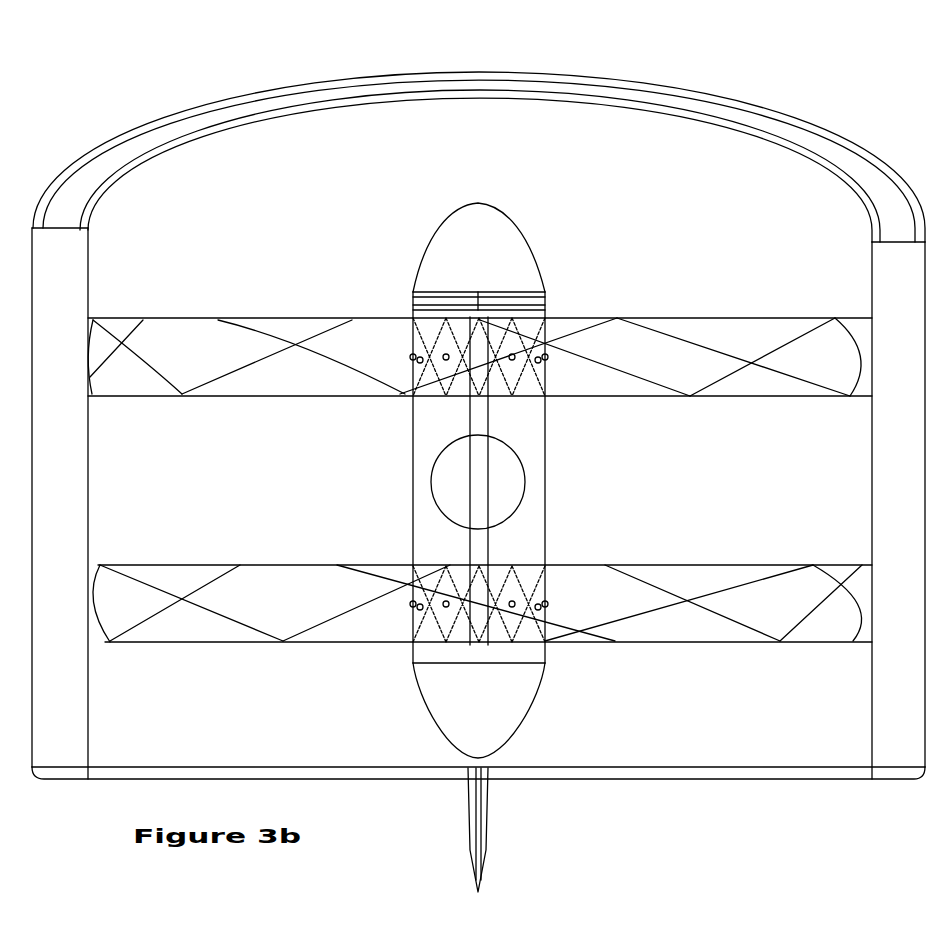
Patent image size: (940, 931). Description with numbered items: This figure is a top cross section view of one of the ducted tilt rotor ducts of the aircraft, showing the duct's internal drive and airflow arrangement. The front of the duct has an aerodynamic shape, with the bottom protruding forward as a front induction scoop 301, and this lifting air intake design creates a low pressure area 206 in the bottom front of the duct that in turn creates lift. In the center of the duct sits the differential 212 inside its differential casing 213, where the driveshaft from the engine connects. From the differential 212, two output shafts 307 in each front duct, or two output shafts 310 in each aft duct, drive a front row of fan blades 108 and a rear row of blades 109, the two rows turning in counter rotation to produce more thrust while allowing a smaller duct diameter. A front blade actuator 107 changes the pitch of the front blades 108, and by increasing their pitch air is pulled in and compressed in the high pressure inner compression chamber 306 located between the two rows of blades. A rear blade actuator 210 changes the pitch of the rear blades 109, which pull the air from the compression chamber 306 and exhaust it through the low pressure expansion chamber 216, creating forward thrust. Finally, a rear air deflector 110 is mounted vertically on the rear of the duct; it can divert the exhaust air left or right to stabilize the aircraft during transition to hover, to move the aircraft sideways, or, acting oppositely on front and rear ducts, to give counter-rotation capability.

The front induction scoop 301 is at (285, 91).
The low pressure area 206 is at (530, 157).
The front row of fan blades 108 is at (355, 353).
The front blade actuator 107 is at (497, 257).
The high pressure inner compression chamber 306 is at (270, 440).
The output shafts 307 is at (478, 422).
The differential casing 213 is at (545, 440).
The differential 212 is at (452, 478).
The output shafts 310 is at (545, 533).
The low pressure expansion chamber 216 is at (352, 683).
The rear row of blades 109 is at (680, 623).
The rear blade actuator 210 is at (485, 697).
The rear air deflector 110 is at (485, 805).